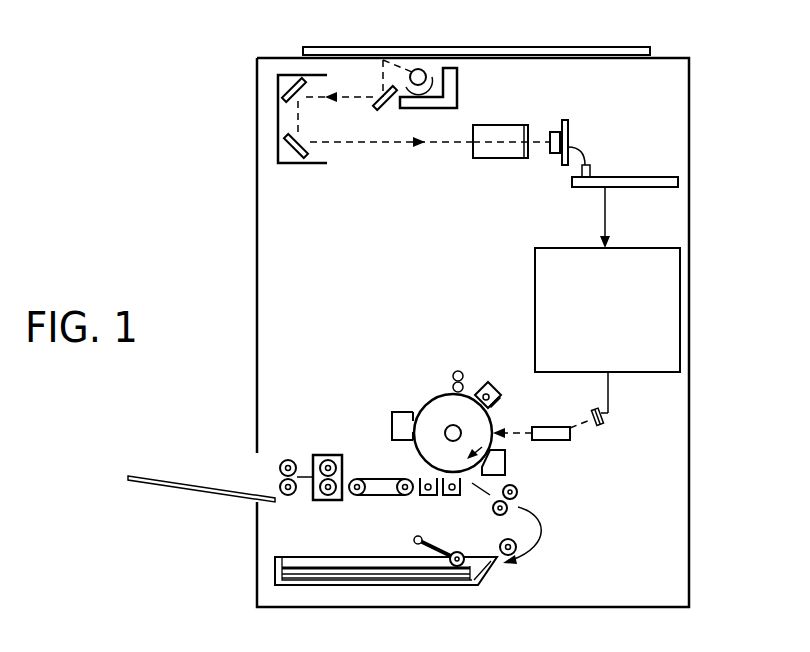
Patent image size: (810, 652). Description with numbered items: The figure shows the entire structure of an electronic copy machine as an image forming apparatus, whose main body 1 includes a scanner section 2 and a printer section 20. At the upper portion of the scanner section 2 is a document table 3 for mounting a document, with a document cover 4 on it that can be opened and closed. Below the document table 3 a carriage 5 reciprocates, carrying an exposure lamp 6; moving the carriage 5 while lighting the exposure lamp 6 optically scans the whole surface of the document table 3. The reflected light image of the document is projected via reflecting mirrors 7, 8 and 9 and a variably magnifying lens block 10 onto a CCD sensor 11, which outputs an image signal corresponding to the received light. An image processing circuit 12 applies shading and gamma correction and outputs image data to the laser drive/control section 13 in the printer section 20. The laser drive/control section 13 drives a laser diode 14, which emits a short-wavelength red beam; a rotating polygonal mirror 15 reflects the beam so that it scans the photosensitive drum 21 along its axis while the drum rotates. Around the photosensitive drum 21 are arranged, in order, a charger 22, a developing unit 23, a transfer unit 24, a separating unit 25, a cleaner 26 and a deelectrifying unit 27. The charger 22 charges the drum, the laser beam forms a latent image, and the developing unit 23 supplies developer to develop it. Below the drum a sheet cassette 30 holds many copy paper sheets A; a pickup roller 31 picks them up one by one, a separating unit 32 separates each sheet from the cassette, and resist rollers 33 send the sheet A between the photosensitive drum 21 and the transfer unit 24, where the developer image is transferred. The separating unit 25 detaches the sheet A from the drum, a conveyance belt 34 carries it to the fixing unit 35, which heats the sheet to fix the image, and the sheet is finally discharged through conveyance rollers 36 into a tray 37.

The main body 1 is at (690, 78).
The scanner section 2 is at (677, 115).
The document table 3 is at (605, 58).
The document cover 4 is at (575, 47).
The carriage 5 is at (455, 73).
The exposure lamp 6 is at (418, 68).
The reflecting mirror 7 is at (393, 104).
The reflecting mirror 8 is at (297, 80).
The reflecting mirror 9 is at (297, 160).
The variably magnifying lens block 10 is at (497, 125).
The CCD sensor 11 is at (570, 131).
The image processing circuit 12 is at (657, 177).
The laser drive/control section 13 is at (535, 298).
The laser diode 14 is at (602, 425).
The polygonal mirror 15 is at (557, 440).
The printer section 20 is at (680, 400).
The photosensitive drum 21 is at (427, 403).
The charger 22 is at (493, 385).
The developing unit 23 is at (507, 460).
The transfer unit 24 is at (458, 497).
The separating unit 25 is at (423, 497).
The cleaner 26 is at (392, 423).
The deelectrifying unit 27 is at (458, 370).
The sheet cassette 30 is at (497, 567).
The pickup roller 31 is at (457, 567).
The separating unit 32 is at (518, 545).
The resist rollers 33 is at (517, 505).
The conveyance belt 34 is at (387, 497).
The fixing unit 35 is at (327, 455).
The conveyance rollers 36 is at (288, 460).
The tray 37 is at (185, 480).
The copy paper sheets A is at (327, 567).